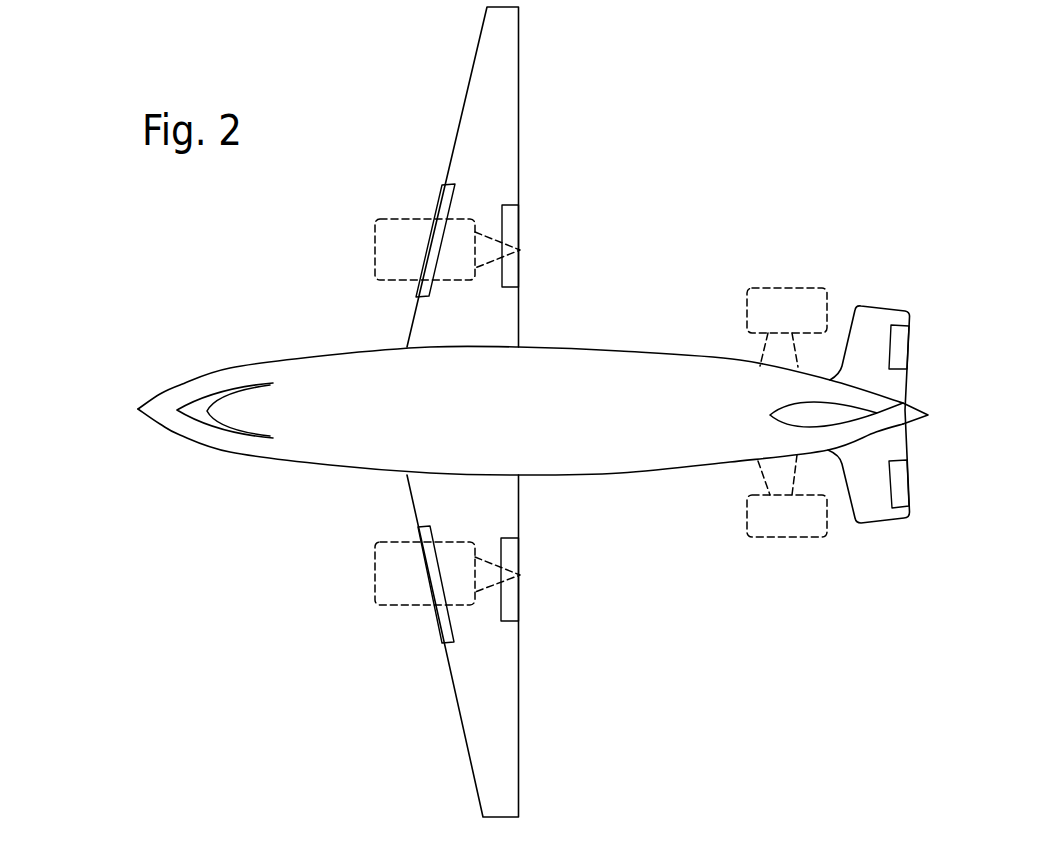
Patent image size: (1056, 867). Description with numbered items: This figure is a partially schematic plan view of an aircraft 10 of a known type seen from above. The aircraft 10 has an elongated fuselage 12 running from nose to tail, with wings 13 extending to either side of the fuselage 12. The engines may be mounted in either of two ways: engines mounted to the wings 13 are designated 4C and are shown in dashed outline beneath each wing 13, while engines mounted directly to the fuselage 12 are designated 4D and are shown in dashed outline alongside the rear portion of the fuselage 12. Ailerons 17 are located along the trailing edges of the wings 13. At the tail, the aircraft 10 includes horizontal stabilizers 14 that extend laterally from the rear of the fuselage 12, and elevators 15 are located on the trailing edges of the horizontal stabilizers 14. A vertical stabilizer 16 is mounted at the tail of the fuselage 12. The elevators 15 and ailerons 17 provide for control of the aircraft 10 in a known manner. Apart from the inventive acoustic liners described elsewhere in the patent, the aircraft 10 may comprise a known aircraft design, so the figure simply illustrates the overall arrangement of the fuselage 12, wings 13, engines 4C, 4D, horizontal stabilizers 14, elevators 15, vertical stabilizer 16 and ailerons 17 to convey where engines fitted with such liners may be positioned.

The aircraft 10 is at (595, 345).
The fuselage 12 is at (333, 357).
The wings 13 is at (505, 165).
The ailerons 17 is at (518, 273).
The engines mounted to the wings 4C is at (375, 218).
The engines mounted directly to the fuselage 4D is at (818, 286).
The horizontal stabilizers 14 is at (903, 387).
The elevators 15 is at (903, 350).
The vertical stabilizer 16 is at (900, 402).